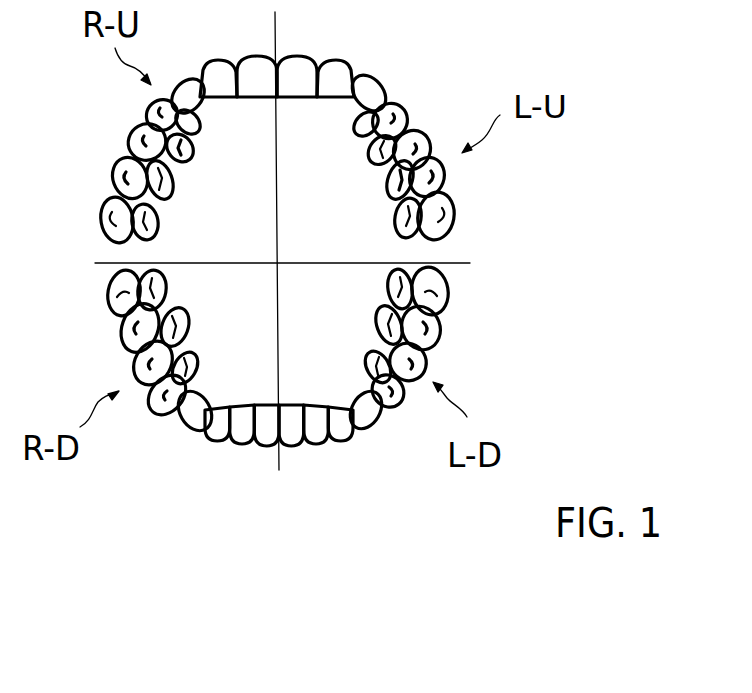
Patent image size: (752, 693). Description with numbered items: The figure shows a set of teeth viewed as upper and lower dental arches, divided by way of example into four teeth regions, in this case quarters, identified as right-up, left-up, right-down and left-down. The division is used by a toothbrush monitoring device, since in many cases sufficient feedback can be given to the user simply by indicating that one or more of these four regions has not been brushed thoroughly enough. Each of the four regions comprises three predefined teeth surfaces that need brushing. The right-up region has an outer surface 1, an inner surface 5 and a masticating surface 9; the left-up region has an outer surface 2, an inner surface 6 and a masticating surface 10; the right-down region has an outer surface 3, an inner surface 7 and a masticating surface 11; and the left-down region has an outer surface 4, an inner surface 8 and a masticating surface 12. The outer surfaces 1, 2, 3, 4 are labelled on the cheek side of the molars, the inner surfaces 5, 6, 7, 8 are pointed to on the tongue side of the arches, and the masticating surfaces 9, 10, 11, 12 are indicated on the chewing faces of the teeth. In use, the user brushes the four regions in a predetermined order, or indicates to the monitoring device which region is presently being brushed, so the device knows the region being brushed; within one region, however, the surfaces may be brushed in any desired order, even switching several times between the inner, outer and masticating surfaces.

The outer surface 1 is at (118, 182).
The outer surface 2 is at (456, 216).
The outer surface 3 is at (115, 294).
The outer surface 4 is at (445, 296).
The inner surface 5 is at (176, 188).
The inner surface 6 is at (366, 147).
The inner surface 7 is at (192, 341).
The inner surface 8 is at (372, 341).
The masticating surface 9 is at (187, 144).
The masticating surface 10 is at (396, 223).
The masticating surface 11 is at (165, 290).
The masticating surface 12 is at (387, 290).